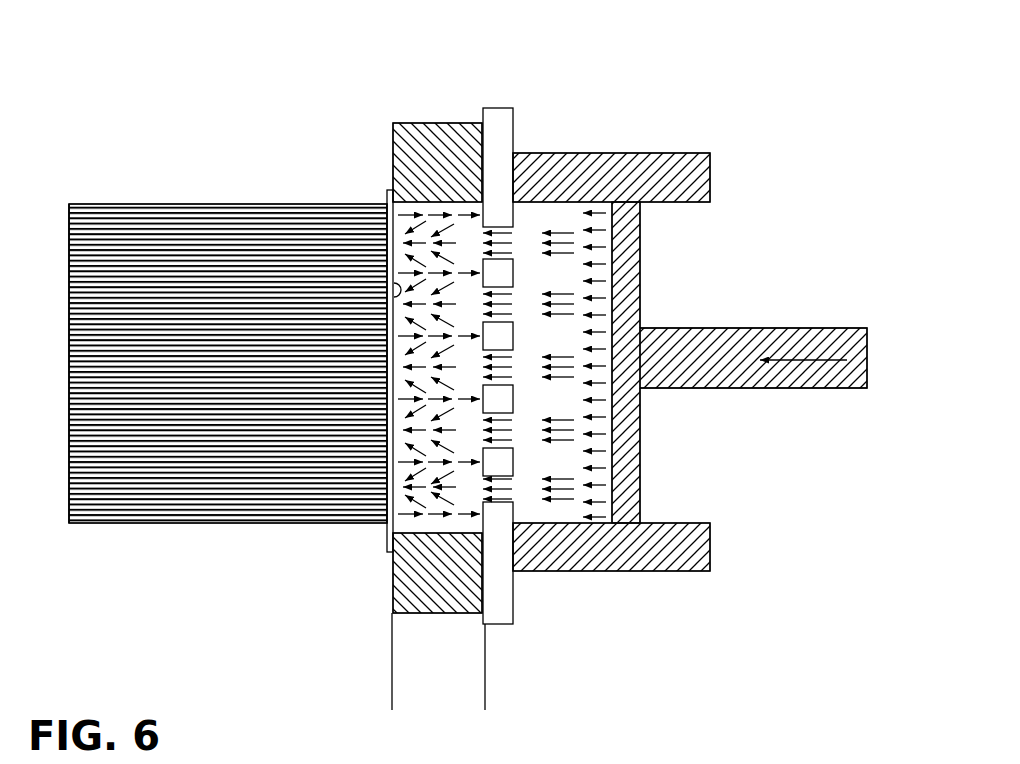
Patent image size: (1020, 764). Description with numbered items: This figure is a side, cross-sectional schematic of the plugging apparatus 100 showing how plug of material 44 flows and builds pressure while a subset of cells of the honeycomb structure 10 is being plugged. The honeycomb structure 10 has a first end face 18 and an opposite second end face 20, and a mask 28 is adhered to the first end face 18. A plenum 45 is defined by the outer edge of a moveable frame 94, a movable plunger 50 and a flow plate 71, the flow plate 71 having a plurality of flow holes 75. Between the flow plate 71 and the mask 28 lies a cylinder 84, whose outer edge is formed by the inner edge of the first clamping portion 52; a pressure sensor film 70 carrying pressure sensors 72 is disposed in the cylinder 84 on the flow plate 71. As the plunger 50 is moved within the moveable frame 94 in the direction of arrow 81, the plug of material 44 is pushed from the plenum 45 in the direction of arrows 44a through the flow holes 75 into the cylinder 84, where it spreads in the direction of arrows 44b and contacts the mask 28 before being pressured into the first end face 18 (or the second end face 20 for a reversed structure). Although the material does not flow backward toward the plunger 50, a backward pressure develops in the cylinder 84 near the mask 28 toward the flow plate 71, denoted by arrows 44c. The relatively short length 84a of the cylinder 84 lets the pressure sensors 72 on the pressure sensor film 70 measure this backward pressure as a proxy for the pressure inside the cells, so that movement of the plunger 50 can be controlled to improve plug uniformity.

The honeycomb structure 10 is at (226, 197).
The first end face 18 is at (388, 285).
The second end face 20 is at (68, 478).
The mask 28 is at (390, 200).
The plug of material 44 is at (519, 281).
The arrows 44a is at (553, 363).
The arrows 44b is at (407, 250).
The arrows 44c is at (462, 333).
The plenum 45 is at (551, 455).
The plunger 50 is at (627, 283).
The first clamping portion 52 is at (458, 127).
The pressure sensor film 70 is at (449, 165).
The flow plate 71 is at (522, 137).
The pressure sensors 72 is at (430, 165).
The flow holes 75 is at (513, 305).
The arrow 81 is at (807, 360).
The cylinder 84 is at (399, 580).
The length 84a is at (350, 687).
The moveable frame 94 is at (680, 555).
The plugging apparatus 100 is at (746, 122).